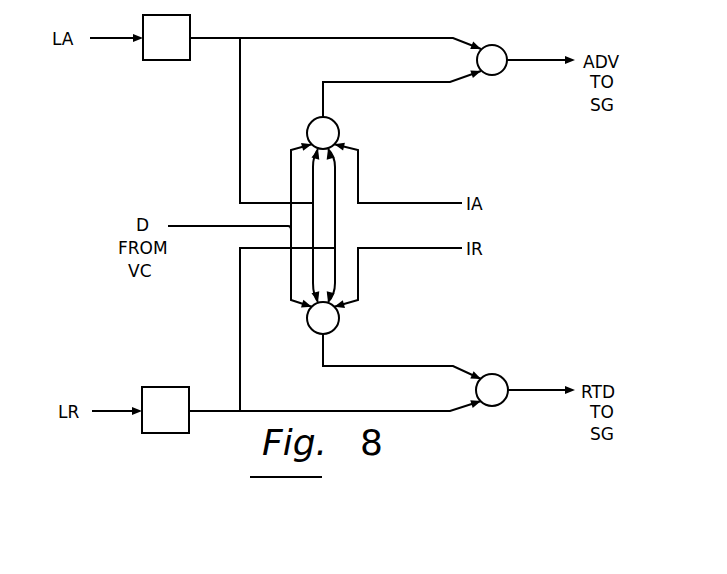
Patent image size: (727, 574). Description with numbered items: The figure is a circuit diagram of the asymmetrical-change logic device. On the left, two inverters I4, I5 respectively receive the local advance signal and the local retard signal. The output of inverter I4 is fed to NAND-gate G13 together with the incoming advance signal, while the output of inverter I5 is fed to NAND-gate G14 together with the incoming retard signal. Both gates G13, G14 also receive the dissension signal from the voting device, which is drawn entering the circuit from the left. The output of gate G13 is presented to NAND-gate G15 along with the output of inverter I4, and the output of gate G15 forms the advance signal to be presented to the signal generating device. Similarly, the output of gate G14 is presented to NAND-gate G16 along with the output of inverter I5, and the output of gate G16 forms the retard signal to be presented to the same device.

The inverter I4 is at (166, 37).
The inverter I5 is at (165, 410).
The NAND-gate G13 is at (347, 133).
The NAND-gate G14 is at (347, 322).
The NAND-gate G15 is at (510, 53).
The NAND-gate G16 is at (510, 384).